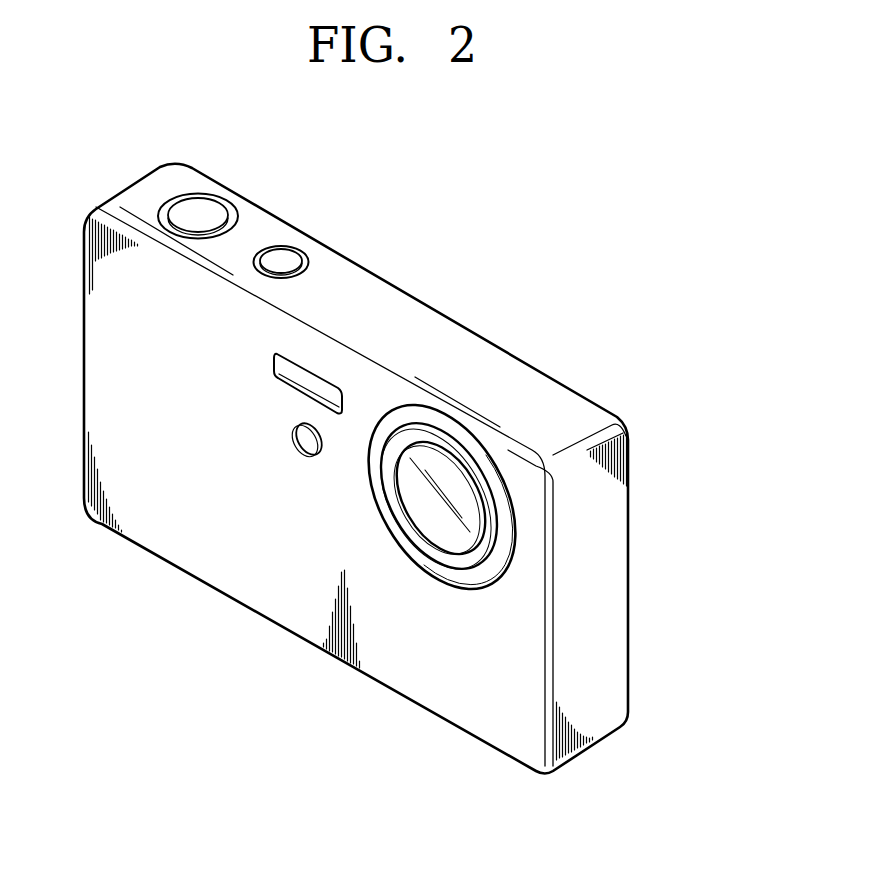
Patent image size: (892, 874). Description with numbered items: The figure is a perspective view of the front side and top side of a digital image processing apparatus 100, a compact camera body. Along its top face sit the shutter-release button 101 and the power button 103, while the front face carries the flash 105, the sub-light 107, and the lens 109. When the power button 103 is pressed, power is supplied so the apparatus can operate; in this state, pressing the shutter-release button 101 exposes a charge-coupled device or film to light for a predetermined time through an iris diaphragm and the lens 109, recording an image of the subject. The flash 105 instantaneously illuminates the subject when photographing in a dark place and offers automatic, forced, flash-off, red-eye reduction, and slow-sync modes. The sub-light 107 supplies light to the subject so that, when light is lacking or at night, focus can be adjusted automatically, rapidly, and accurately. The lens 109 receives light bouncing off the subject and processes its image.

The digital camera 100 is at (586, 337).
The shutter-release button 101 is at (212, 208).
The power button 103 is at (290, 258).
The flash 105 is at (308, 382).
The sub-light 107 is at (318, 442).
The lens 109 is at (495, 543).